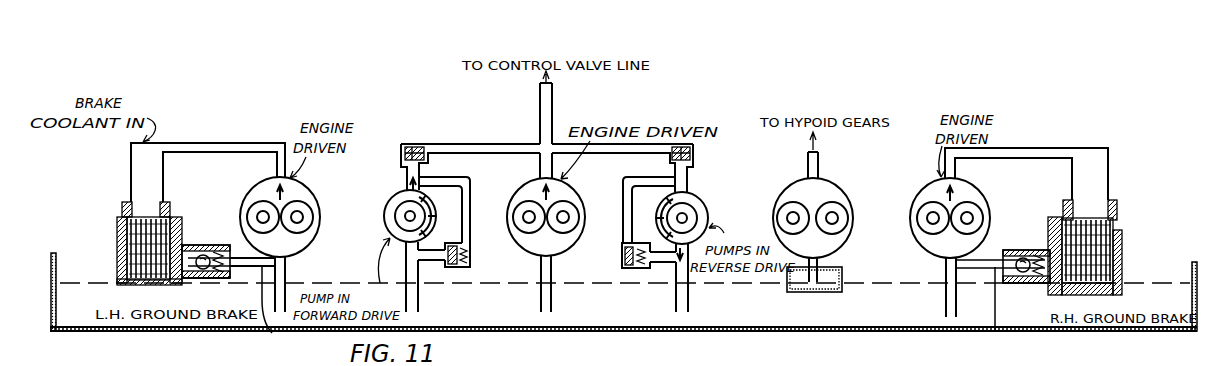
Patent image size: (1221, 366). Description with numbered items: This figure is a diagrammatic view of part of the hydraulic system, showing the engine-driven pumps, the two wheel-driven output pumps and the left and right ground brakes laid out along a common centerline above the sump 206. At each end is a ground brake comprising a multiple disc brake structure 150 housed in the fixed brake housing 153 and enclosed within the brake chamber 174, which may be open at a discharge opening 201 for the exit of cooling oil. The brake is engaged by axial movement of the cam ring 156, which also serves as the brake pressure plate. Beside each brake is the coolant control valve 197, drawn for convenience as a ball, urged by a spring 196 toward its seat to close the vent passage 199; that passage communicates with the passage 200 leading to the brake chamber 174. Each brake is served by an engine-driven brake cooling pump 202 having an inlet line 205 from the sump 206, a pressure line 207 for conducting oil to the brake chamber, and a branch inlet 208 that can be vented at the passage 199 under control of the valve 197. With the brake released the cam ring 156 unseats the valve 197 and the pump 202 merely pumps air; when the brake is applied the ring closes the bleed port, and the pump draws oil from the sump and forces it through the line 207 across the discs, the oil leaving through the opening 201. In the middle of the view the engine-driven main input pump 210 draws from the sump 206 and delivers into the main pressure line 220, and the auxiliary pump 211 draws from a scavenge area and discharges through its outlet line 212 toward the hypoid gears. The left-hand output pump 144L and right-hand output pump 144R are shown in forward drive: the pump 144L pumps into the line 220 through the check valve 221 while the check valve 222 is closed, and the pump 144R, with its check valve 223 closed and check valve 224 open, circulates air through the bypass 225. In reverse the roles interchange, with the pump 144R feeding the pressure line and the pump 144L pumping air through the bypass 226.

The left-hand wheel-driven output pump 144L is at (397, 200).
The right-hand wheel-driven output pump 144R is at (696, 196).
The multiple disc brake structure 150 is at (118, 231).
The brake housing 153 is at (121, 201).
The cam ring 156 is at (181, 245).
The brake chamber 174 is at (117, 271).
The spring 196 is at (212, 248).
The valve 197 is at (201, 279).
The vent passage 199 is at (190, 247).
The passage 200 is at (224, 253).
The discharge opening 201 is at (120, 284).
The brake cooling pump 202 is at (292, 186).
The inlet line 205 is at (285, 272).
The sump 206 is at (553, 331).
The pressure line 207 is at (182, 143).
The branch inlet 208 is at (634, 312).
The main input pump 210 is at (568, 182).
The auxiliary pump 211 is at (829, 189).
The outlet line 212 is at (819, 164).
The main pressure line 220 is at (551, 116).
The check valve 221 is at (424, 148).
The check valve 222 is at (470, 256).
The check valve 223 is at (693, 151).
The check valve 224 is at (622, 259).
The bypass 225 is at (622, 234).
The bypass 226 is at (458, 182).